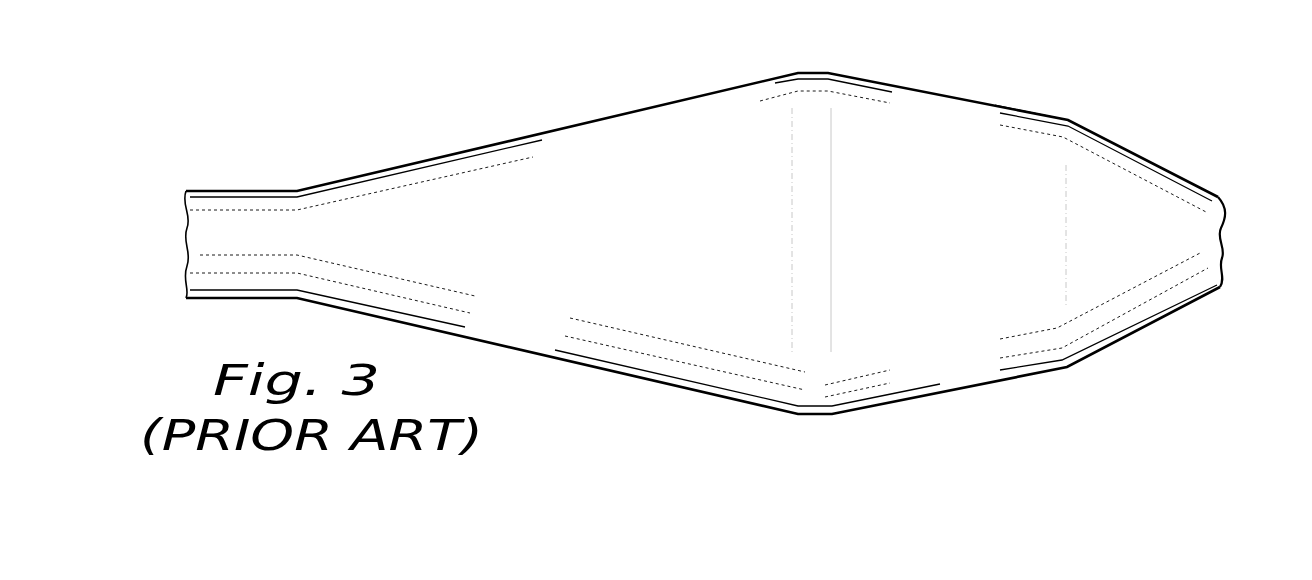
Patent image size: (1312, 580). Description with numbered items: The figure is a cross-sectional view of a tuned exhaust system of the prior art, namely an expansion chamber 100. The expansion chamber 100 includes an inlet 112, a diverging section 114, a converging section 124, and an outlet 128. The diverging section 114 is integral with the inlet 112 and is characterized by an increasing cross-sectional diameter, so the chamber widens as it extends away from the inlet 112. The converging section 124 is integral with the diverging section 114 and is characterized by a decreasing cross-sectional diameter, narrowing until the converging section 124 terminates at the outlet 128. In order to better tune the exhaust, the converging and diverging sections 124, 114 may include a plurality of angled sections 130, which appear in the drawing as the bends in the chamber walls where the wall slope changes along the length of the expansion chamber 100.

The expansion chamber 100 is at (588, 373).
The inlet 112 is at (213, 190).
The diverging section 114 is at (510, 228).
The converging section 124 is at (979, 243).
The outlet 128 is at (1228, 268).
The angled sections 130 is at (918, 90).